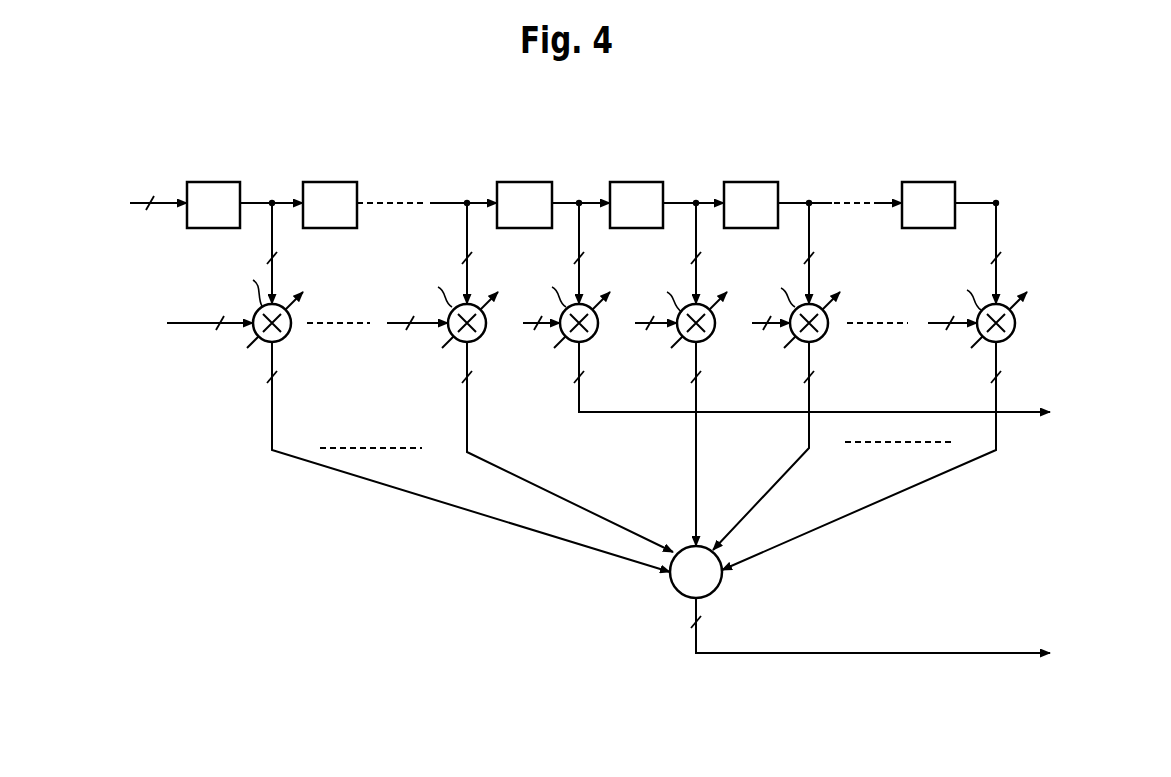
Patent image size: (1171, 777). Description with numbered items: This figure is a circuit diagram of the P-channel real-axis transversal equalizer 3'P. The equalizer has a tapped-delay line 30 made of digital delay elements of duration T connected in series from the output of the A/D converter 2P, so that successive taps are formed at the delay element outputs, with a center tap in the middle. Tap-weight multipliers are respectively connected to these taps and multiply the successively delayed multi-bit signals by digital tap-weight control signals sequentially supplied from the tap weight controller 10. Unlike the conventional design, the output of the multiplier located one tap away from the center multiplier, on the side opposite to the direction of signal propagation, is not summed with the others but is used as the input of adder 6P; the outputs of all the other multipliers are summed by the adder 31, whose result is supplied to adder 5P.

The real-axis transversal equalizer 3'P is at (601, 376).
The tapped-delay line 30 is at (980, 168).
The adder 31 is at (680, 597).
The A/D converter 2P is at (112, 209).
The tap weight controller 10 is at (507, 325).
The adder 6P is at (872, 391).
The adder 5P is at (928, 637).